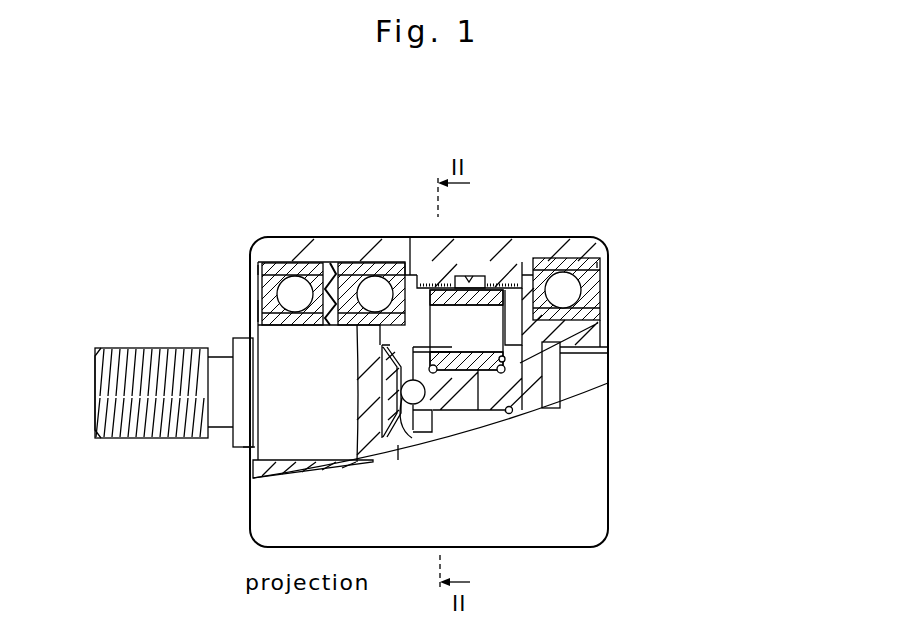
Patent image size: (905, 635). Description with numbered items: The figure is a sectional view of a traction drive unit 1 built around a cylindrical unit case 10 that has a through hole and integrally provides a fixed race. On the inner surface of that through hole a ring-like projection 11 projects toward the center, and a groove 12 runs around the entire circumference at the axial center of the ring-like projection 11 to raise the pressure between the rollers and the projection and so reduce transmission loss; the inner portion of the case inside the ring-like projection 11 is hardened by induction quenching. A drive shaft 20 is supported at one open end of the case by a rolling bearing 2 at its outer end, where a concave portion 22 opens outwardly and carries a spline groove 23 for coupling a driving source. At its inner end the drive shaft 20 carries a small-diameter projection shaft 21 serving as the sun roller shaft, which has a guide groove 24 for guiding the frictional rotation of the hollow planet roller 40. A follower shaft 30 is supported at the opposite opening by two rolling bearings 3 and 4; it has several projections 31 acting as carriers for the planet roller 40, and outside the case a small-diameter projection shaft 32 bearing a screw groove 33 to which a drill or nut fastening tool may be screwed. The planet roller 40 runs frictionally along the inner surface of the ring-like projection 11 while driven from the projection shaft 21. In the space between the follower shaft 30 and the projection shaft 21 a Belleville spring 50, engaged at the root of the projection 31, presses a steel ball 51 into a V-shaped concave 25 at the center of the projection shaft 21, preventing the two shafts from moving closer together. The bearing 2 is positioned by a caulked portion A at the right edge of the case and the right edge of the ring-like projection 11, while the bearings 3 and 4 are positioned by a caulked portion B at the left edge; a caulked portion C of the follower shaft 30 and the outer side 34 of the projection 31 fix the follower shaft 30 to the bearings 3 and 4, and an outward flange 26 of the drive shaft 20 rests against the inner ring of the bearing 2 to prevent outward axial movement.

The traction drive unit 1 is at (619, 324).
The rolling bearing 2 is at (569, 259).
The rolling bearing 3 is at (274, 261).
The rolling bearing 4 is at (347, 261).
The unit case 10 is at (493, 238).
The ring-like projection 11 is at (420, 276).
The groove 12 is at (466, 276).
The drive shaft 20 is at (533, 414).
The projection shaft 21 is at (490, 402).
The concave portion 22 is at (600, 370).
The spline groove 23 is at (597, 349).
The guide groove 24 is at (526, 412).
The V-shaped concave 25 is at (412, 438).
The outward flange 26 is at (527, 305).
The follower shaft 30 is at (253, 332).
The projection 31 is at (410, 238).
The projection shaft 32 is at (160, 440).
The screw groove 33 is at (127, 440).
The outer side 34 is at (372, 330).
The planet roller 40 is at (522, 262).
The Belleville spring 50 is at (390, 370).
The ball 51 is at (405, 400).
The caulked portion A is at (602, 267).
The caulked portion B is at (256, 266).
The caulked portion C is at (254, 320).